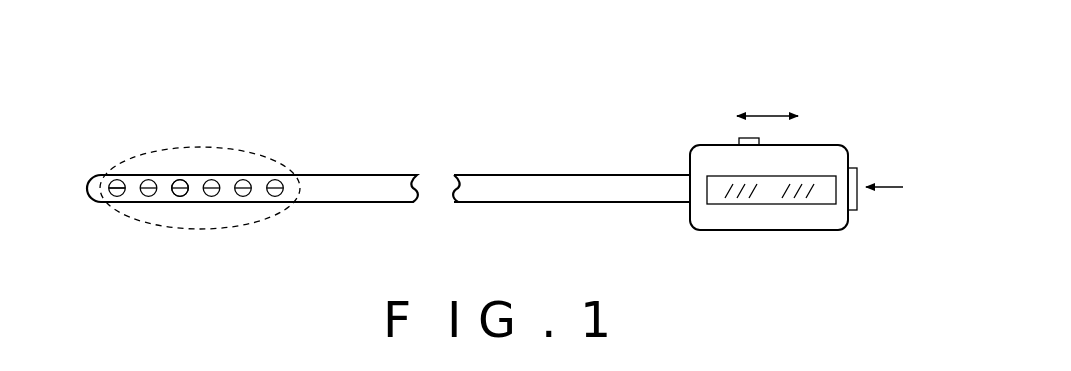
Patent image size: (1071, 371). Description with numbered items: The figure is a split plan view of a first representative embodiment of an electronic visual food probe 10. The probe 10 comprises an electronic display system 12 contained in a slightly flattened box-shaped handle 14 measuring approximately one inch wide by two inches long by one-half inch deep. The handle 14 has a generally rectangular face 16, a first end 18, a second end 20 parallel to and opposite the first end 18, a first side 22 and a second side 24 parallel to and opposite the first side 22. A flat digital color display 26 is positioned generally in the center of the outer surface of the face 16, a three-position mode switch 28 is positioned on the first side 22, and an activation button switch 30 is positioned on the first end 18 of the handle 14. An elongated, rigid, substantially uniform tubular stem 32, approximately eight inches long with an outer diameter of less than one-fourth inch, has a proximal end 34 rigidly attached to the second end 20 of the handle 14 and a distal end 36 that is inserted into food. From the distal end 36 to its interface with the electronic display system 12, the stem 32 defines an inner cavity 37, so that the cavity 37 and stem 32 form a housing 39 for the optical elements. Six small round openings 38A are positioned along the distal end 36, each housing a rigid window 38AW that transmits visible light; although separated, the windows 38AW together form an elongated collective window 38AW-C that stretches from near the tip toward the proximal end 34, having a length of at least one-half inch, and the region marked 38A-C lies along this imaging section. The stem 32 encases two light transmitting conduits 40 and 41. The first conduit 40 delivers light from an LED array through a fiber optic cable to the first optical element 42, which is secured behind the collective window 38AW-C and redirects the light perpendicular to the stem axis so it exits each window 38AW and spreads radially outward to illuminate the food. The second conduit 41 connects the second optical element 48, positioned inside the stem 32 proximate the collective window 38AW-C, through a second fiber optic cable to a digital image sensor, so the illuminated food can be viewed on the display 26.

The electronic visual food probe 10 is at (569, 103).
The electronic display system 12 is at (803, 262).
The handle 14 is at (832, 145).
The face 16 is at (722, 219).
The first end 18 is at (850, 219).
The second end 20 is at (690, 161).
The first side 22 is at (805, 144).
The second side 24 is at (747, 231).
The flat digital color display 26 is at (810, 194).
The three-position mode switch 28 is at (742, 139).
The activation button switch 30 is at (858, 174).
The tubular stem 32 is at (518, 203).
The proximal end 34 is at (673, 193).
The distal end 36 is at (210, 219).
The inner cavity 37 is at (280, 158).
The small round openings 38A is at (150, 187).
The rigid window 38AW is at (167, 176).
The aperture center 38A-C is at (228, 141).
The elongated collective window 38AW-C is at (152, 228).
The housing 39 is at (113, 167).
The light transmitting conduit 40 is at (238, 177).
The light transmitting conduit 41 is at (252, 201).
The first optical element 42 is at (190, 188).
The second optical element 48 is at (148, 196).